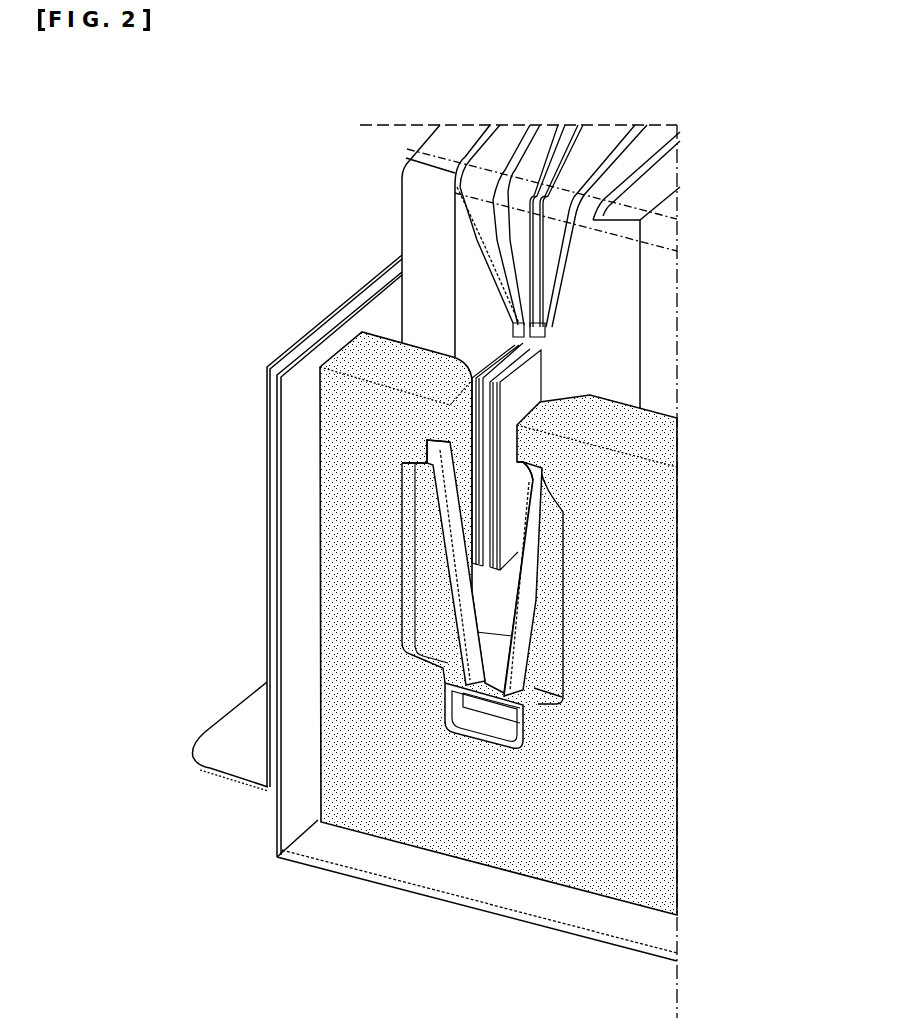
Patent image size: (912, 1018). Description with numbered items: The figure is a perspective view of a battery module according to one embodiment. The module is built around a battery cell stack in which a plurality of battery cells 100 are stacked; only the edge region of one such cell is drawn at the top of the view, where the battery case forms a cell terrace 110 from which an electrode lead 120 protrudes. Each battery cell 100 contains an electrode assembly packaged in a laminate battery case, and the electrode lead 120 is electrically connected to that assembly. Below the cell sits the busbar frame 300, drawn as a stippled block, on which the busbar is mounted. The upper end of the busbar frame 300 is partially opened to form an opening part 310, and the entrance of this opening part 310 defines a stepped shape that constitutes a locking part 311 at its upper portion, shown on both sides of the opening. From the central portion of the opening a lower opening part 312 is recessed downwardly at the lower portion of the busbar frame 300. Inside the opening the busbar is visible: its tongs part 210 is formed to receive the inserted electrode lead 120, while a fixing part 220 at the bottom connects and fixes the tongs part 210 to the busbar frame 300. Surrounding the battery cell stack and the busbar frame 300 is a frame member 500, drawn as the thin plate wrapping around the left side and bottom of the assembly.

The battery cell 100 is at (597, 137).
The cell terrace 110 is at (540, 268).
The electrode lead 120 is at (528, 388).
The tongs part 210 is at (520, 628).
The fixing part 220 is at (520, 743).
The busbar frame 300 is at (405, 790).
The opening part 310 is at (425, 605).
The locking part 311 is at (427, 452).
The lower opening part 312 is at (487, 703).
The frame member 500 is at (298, 802).